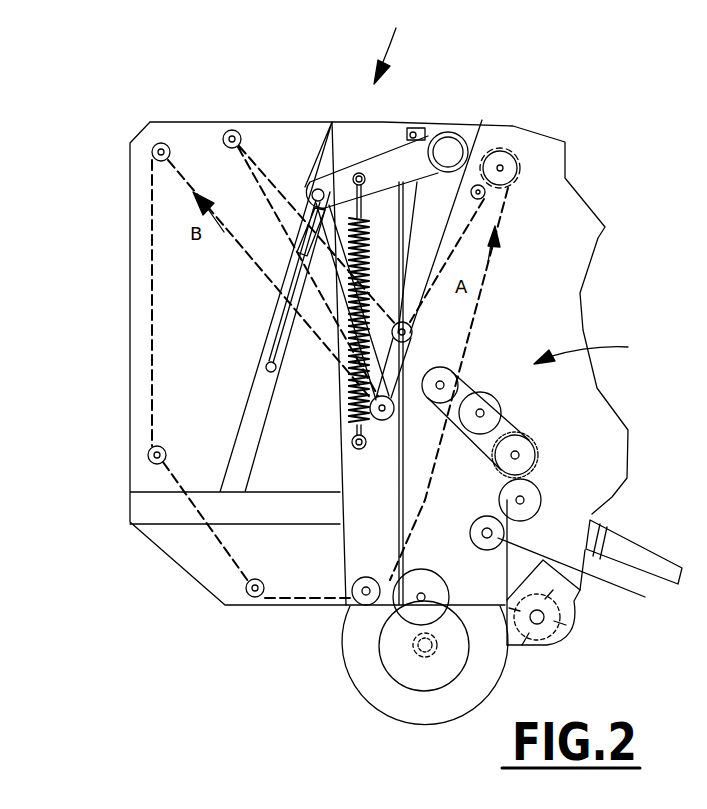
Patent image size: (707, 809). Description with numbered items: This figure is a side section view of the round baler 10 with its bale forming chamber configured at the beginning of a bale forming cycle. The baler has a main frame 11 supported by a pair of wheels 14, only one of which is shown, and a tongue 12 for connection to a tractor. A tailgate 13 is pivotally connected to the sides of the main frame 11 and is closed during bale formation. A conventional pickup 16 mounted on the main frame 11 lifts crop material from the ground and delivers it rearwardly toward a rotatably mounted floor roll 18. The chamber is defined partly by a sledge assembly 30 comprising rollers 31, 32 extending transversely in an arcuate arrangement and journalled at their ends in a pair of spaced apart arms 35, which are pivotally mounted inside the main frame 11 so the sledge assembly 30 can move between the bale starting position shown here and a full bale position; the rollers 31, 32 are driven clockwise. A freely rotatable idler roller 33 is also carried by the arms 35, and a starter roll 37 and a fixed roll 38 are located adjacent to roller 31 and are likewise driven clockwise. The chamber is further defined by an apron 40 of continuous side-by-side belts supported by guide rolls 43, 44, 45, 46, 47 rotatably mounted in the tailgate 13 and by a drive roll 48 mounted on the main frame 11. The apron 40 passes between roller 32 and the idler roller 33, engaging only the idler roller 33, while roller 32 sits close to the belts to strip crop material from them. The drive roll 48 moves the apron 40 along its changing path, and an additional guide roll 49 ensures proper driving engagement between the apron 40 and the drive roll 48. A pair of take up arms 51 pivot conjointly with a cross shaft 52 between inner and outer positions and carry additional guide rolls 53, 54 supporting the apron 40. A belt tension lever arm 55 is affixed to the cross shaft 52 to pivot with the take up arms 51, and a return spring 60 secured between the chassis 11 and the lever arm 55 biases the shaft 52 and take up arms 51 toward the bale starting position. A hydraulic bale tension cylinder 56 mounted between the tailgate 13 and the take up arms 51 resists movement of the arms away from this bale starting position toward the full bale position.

The round baler 10 is at (390, 47).
The main frame 11 is at (476, 582).
The tongue 12 is at (640, 540).
The tailgate 13 is at (128, 205).
The wheels 14 is at (355, 680).
The pickup 16 is at (590, 633).
The floor roll 18 is at (412, 615).
The sledge assembly 30 is at (595, 349).
The roller 31 is at (533, 440).
The roller 32 is at (500, 405).
The idler roller 33 is at (457, 373).
The arms 35 is at (492, 445).
The starter roll 37 is at (585, 573).
The fixed roll 38 is at (542, 489).
The apron 40 is at (147, 312).
The guide roll 43 is at (230, 131).
The guide roll 44 is at (158, 143).
The guide roll 45 is at (150, 460).
The guide roll 46 is at (247, 592).
The guide roll 47 is at (362, 598).
The drive roll 48 is at (503, 152).
The guide roll 49 is at (488, 194).
The take up arms 51 is at (455, 188).
The cross shaft 52 is at (439, 133).
The guide roll 53 is at (380, 420).
The guide roll 54 is at (413, 331).
The belt tension lever arm 55 is at (372, 158).
The hydraulic bale tension cylinder 56 is at (275, 348).
The return spring 60 is at (352, 412).